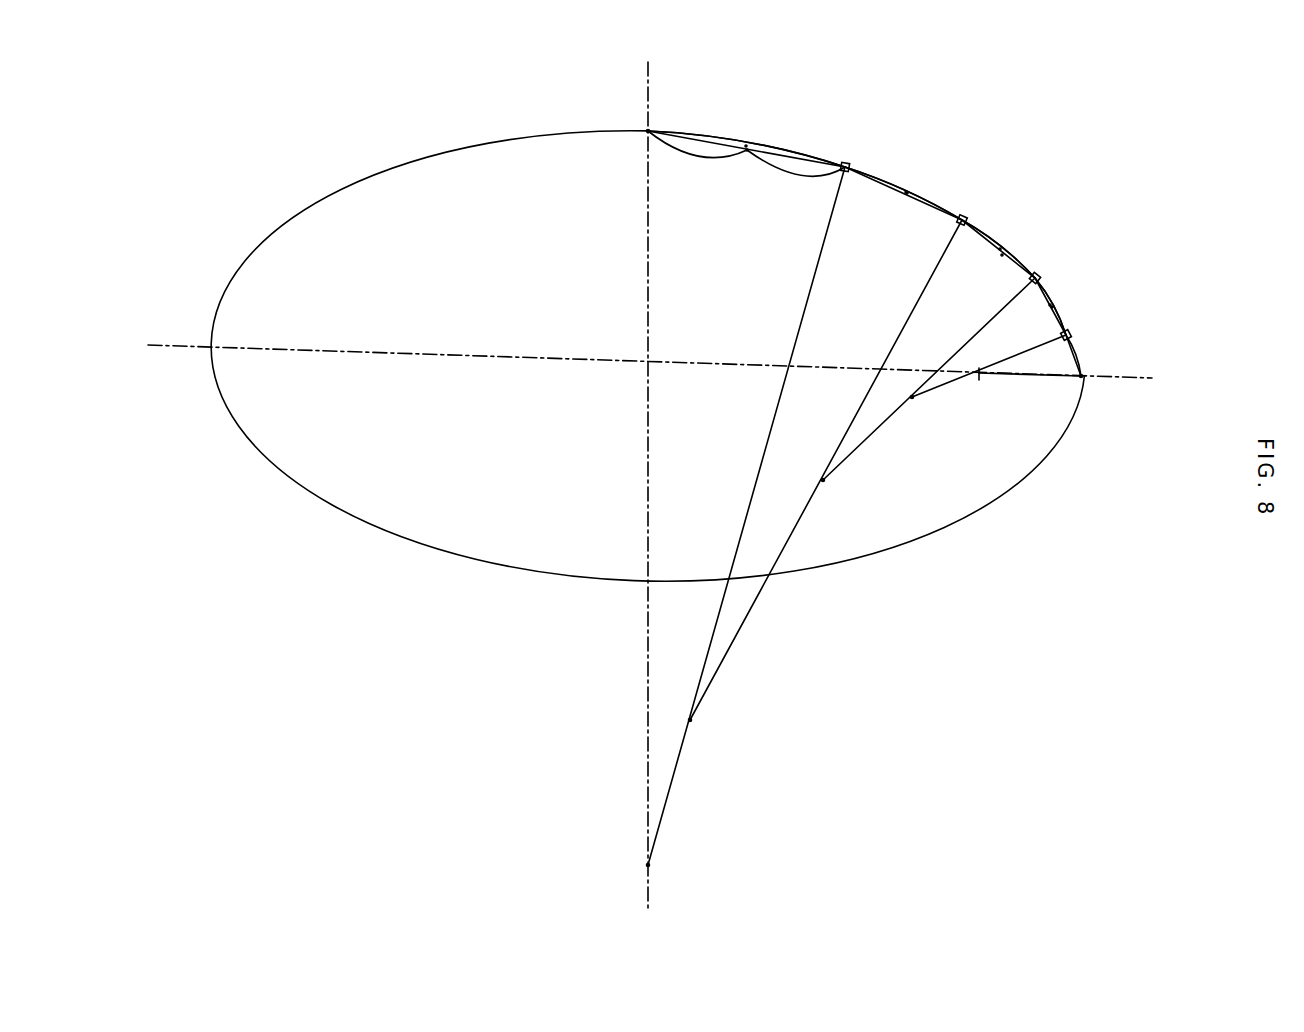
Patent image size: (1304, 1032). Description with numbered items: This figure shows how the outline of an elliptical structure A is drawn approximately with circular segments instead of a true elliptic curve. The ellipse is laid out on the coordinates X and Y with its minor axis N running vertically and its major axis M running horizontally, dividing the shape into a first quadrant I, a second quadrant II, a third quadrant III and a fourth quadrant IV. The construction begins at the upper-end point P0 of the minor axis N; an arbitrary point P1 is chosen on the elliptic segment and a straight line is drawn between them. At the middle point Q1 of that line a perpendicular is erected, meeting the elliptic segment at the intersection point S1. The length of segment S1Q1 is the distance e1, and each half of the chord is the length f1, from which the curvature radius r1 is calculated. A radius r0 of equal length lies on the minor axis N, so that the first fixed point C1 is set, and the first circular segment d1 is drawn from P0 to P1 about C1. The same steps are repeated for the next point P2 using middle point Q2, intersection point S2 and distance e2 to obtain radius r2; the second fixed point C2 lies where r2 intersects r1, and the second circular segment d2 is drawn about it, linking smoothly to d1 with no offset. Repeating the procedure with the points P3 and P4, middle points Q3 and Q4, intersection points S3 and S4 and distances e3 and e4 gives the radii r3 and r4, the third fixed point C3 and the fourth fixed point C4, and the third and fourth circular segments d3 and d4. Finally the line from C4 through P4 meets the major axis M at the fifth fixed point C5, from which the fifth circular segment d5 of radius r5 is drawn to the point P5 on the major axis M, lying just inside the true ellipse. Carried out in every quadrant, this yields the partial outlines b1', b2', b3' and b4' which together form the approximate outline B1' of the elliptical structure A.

The elliptical structure A is at (1121, 127).
The approximate outline B1' is at (865, 244).
The initial line X is at (638, 485).
The y coordinate Y is at (658, 369).
The minor axis N is at (651, 242).
The major axis M is at (752, 363).
The first quadrant I is at (727, 300).
The second quadrant II is at (571, 295).
The third quadrant III is at (574, 444).
The fourth quadrant IV is at (731, 444).
The upper-end point of the minor axis P0 is at (650, 130).
The point on the elliptic segment P1 is at (846, 165).
The point on the elliptic segment P2 is at (963, 218).
The point on the elliptic segment P3 is at (1037, 277).
The point on the elliptic segment P4 is at (1070, 334).
The intersection point of the fifth circular segment and the major axis P5 is at (1082, 378).
The first fixed point C1 is at (651, 866).
The second fixed point C2 is at (692, 722).
The third fixed point C3 is at (826, 483).
The fourth fixed point C4 is at (913, 399).
The fifth fixed point C5 is at (980, 381).
The radius r0 is at (651, 489).
The curvature radius of the first circular segment r1 is at (759, 476).
The curvature radius of the second circular segment r2 is at (901, 332).
The curvature radius of the third circular segment r3 is at (981, 331).
The curvature radius of the fourth circular segment r4 is at (985, 364).
The radius of the fifth circular segment r5 is at (1035, 380).
The distance e1 is at (762, 147).
The distance e2 is at (918, 190).
The distance e3 is at (1013, 250).
The distance e4 is at (1058, 316).
The first circular segment d1 is at (702, 141).
The second circular segment d2 is at (882, 183).
The third circular segment d3 is at (993, 240).
The fourth circular segment d4 is at (1052, 302).
The fifth circular segment d5 is at (1077, 357).
The length of straight-line segment f1 is at (746, 168).
The intersection point S1 is at (745, 146).
The intersection point S2 is at (906, 190).
The intersection point S3 is at (1000, 248).
The intersection point S4 is at (1052, 307).
The middle point Q1 is at (748, 153).
The middle point Q2 is at (907, 194).
The middle point Q3 is at (1002, 256).
The middle point Q4 is at (1050, 306).
The partial outline b1' is at (807, 125).
The partial outline b2' is at (387, 133).
The partial outline b3' is at (420, 580).
The partial outline b4' is at (936, 573).